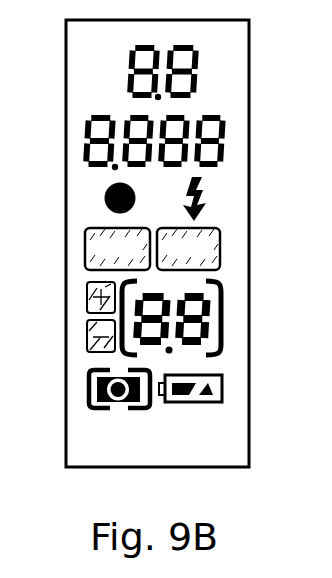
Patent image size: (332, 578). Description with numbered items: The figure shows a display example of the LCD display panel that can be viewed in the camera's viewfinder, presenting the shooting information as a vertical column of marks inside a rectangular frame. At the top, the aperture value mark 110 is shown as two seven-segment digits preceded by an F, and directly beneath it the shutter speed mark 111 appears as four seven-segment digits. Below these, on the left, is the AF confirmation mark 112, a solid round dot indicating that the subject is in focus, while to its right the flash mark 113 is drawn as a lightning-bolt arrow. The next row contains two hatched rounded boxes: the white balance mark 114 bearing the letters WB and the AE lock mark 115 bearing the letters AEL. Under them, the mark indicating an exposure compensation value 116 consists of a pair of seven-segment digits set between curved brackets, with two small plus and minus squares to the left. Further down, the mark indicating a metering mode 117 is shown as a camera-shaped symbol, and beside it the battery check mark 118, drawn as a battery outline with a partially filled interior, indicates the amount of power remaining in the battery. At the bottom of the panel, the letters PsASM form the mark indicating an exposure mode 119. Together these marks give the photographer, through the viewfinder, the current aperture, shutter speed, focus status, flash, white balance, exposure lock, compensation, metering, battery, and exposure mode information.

The aperture value mark 110 is at (203, 67).
The shutter speed mark 111 is at (225, 138).
The AF confirmation mark 112 is at (104, 200).
The flash mark 113 is at (217, 195).
The white balance mark 114 is at (86, 245).
The AE lock mark 115 is at (220, 250).
The exposure compensation value mark 116 is at (223, 317).
The metering mode mark 117 is at (88, 388).
The battery check mark 118 is at (222, 385).
The exposure mode mark 119 is at (212, 428).